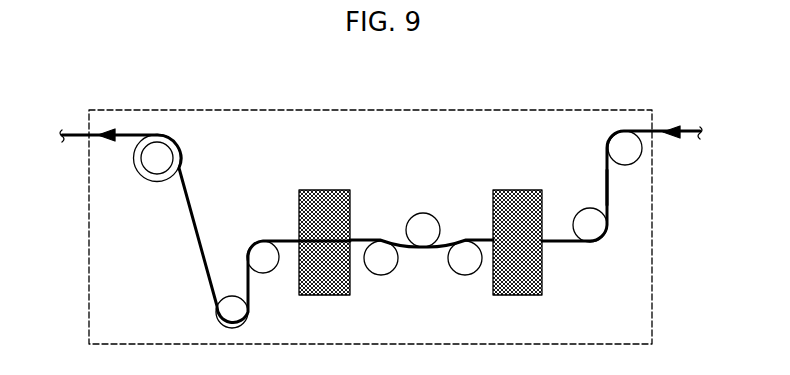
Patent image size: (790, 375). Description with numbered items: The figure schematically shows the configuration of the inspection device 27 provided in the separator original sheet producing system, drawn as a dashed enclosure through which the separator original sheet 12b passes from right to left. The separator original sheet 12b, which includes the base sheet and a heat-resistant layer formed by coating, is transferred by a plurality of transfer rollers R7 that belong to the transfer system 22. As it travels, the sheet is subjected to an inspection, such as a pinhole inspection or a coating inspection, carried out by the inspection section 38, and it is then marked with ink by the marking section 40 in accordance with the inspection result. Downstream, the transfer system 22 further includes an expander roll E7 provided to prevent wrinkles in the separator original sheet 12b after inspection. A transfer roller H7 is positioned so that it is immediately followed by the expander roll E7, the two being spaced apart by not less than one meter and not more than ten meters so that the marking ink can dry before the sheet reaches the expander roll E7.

The inspection device 27 is at (613, 106).
The transfer system 22 is at (447, 202).
The separator original sheet 12b is at (607, 184).
The marking section 40 is at (323, 190).
The inspection section 38 is at (512, 190).
The expander roll E7 is at (160, 172).
The transfer roller H7 is at (228, 302).
The transfer rollers R7 is at (268, 268).